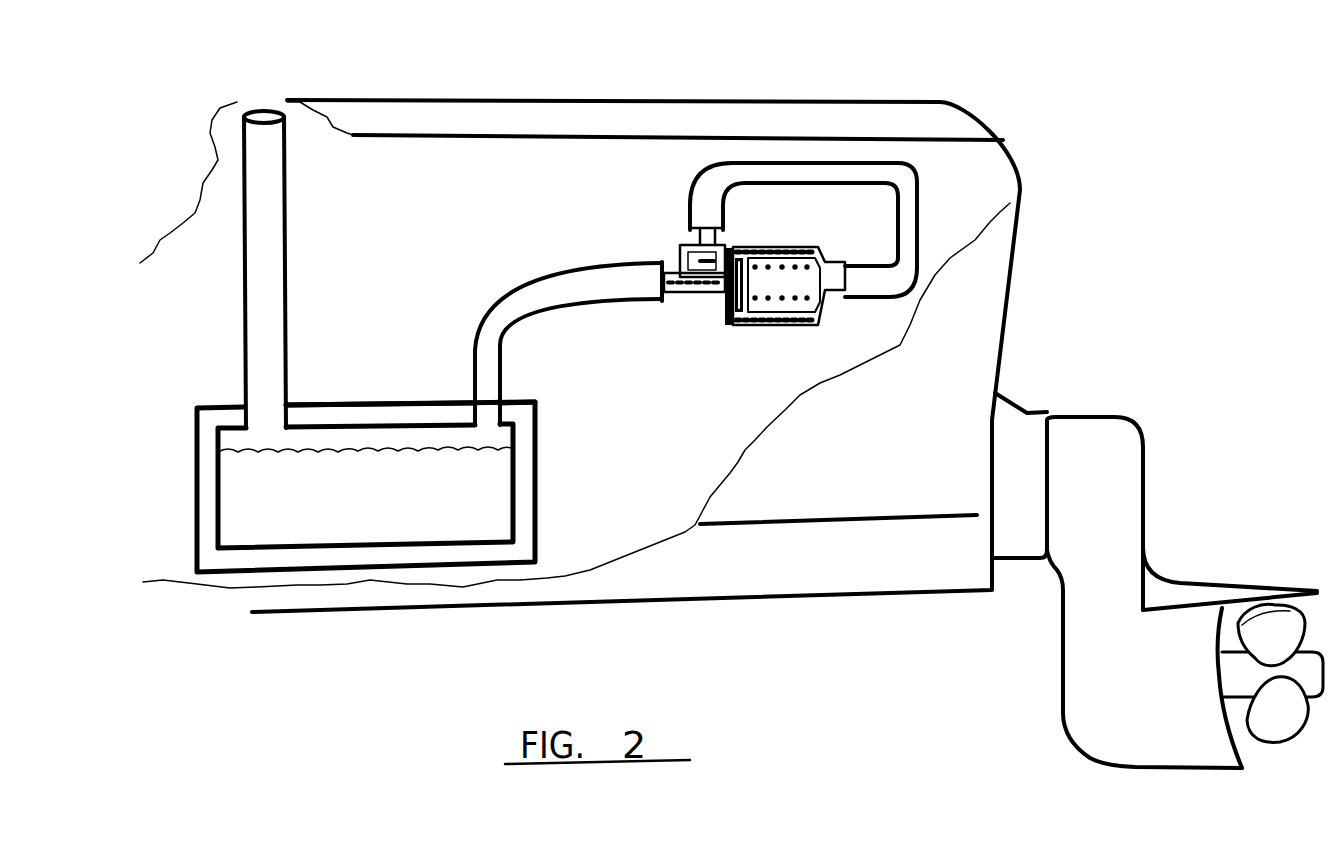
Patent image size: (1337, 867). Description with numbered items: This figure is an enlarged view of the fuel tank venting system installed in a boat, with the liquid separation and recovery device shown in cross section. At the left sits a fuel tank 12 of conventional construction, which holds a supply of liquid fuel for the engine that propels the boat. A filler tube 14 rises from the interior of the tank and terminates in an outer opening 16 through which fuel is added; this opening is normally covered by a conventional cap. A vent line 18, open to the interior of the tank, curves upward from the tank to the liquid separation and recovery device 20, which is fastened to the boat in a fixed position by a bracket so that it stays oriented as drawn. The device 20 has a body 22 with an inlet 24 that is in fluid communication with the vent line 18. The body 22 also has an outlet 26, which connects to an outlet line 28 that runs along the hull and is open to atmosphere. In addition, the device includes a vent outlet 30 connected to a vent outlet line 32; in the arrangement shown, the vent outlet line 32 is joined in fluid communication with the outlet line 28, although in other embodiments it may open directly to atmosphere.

The fuel tank 12 is at (370, 524).
The filler tube 14 is at (286, 268).
The outer opening 16 is at (262, 113).
The vent line 18 is at (510, 335).
The liquid separation and recovery device 20 is at (748, 330).
The body 22 is at (795, 324).
The inlet 24 is at (667, 298).
The outlet 26 is at (690, 247).
The outlet line 28 is at (695, 175).
The vent outlet 30 is at (837, 300).
The vent outlet line 32 is at (920, 232).